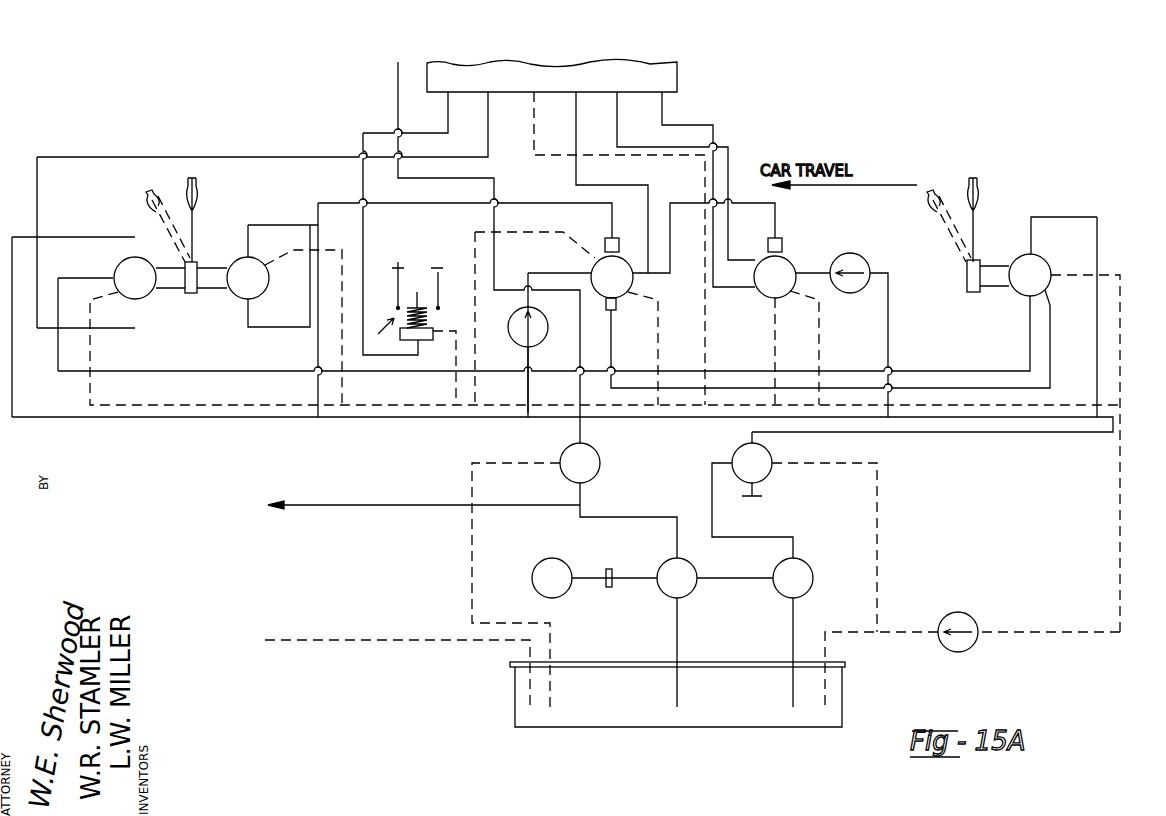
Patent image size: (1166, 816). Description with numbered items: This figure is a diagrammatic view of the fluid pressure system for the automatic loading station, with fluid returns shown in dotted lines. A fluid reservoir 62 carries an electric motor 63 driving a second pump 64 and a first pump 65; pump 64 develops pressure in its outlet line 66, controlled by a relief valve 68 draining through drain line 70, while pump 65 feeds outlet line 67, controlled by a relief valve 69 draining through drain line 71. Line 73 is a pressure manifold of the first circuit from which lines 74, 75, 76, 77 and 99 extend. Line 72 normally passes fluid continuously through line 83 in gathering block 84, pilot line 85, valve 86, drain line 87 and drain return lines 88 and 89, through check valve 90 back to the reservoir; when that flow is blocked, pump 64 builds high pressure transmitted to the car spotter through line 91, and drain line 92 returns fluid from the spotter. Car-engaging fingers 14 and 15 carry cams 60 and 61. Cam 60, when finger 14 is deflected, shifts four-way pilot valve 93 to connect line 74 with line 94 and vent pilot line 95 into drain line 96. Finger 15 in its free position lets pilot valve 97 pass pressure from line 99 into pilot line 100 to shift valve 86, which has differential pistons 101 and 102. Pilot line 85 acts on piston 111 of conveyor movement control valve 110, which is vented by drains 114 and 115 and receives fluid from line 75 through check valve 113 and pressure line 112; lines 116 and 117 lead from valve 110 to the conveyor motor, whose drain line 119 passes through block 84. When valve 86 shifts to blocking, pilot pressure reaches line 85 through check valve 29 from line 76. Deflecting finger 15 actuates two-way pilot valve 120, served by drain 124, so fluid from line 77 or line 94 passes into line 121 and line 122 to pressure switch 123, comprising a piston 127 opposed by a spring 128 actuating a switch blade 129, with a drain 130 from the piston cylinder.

The finger element 14 is at (982, 222).
The second finger element 15 is at (195, 227).
The check valve 29 is at (512, 322).
The cam 60 is at (968, 291).
The cam 61 is at (193, 294).
The fluid reservoir 62 is at (640, 718).
The electric motor 63 is at (565, 595).
The second pump 64 is at (690, 595).
The first pump 65 is at (805, 595).
The outlet line 66 is at (628, 506).
The outlet line 67 is at (782, 530).
The relief valve 68 is at (594, 462).
The relief valve 69 is at (768, 462).
The drain line 70 is at (473, 540).
The drain line 71 is at (878, 548).
The line 72 is at (398, 90).
The pressure manifold line 73 is at (346, 420).
The line 74 is at (1097, 346).
The line 75 is at (890, 336).
The line 76 is at (530, 358).
The line 77 is at (14, 383).
The line 83 is at (576, 130).
The gathering block 84 is at (681, 88).
The pilot line 85 is at (742, 203).
The four-way valve 86 is at (626, 296).
The drain line 87 is at (560, 236).
The drain return line 88 is at (500, 420).
The drain return line 89 is at (1122, 510).
The check valve 90 is at (972, 648).
The pressure outlet line 91 is at (372, 510).
The drain line 92 is at (383, 643).
The four-way pilot valve 93 is at (1043, 263).
The line 94 is at (90, 278).
The pilot line 95 is at (612, 354).
The drain line 96 is at (1120, 272).
The pilot valve 97 is at (264, 292).
The line 99 is at (318, 346).
The pilot line 100 is at (420, 206).
The differential piston 101 is at (614, 238).
The differential piston 102 is at (606, 310).
The conveyor movement control valve 110 is at (770, 298).
The piston 111 is at (780, 248).
The pressure line 112 is at (814, 271).
The check valve 113 is at (862, 258).
The drain 114 is at (776, 338).
The drain 115 is at (820, 320).
The line 116 is at (619, 140).
The line 117 is at (688, 124).
The drain line 119 is at (536, 140).
The two-way pilot valve 120 is at (150, 297).
The line 121 is at (116, 330).
The line 122 is at (364, 246).
The pressure switch 123 is at (382, 336).
The drain 124 is at (97, 306).
The piston 127 is at (419, 342).
The spring 128 is at (430, 322).
The switch blade 129 is at (417, 286).
The drain 130 is at (456, 382).